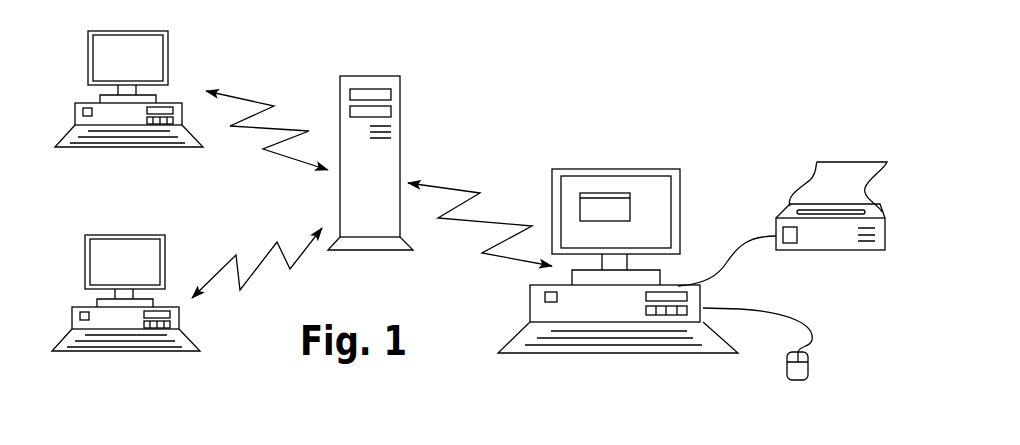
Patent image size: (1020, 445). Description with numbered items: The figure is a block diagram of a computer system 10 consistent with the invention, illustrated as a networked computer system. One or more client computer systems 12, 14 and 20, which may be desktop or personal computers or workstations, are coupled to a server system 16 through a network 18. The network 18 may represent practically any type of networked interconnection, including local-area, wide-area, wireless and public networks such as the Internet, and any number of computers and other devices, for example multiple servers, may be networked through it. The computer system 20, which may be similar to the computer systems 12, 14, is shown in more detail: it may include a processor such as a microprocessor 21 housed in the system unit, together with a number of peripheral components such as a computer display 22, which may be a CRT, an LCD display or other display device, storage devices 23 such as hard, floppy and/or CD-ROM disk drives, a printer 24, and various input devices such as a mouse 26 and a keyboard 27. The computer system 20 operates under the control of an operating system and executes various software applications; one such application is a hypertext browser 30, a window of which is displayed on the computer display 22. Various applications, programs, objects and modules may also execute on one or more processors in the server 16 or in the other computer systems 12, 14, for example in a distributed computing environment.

The computer system 10 is at (539, 81).
The client computer system 12 is at (88, 47).
The client computer system 14 is at (85, 240).
The server system 16 is at (357, 77).
The network 18 is at (277, 242).
The computer system 20 is at (605, 257).
The microprocessor 21 is at (585, 310).
The computer display 22 is at (589, 189).
The storage devices 23 is at (662, 316).
The printer 24 is at (792, 210).
The mouse 26 is at (806, 370).
The keyboard 27 is at (518, 351).
The hypertext browser 30 is at (566, 197).